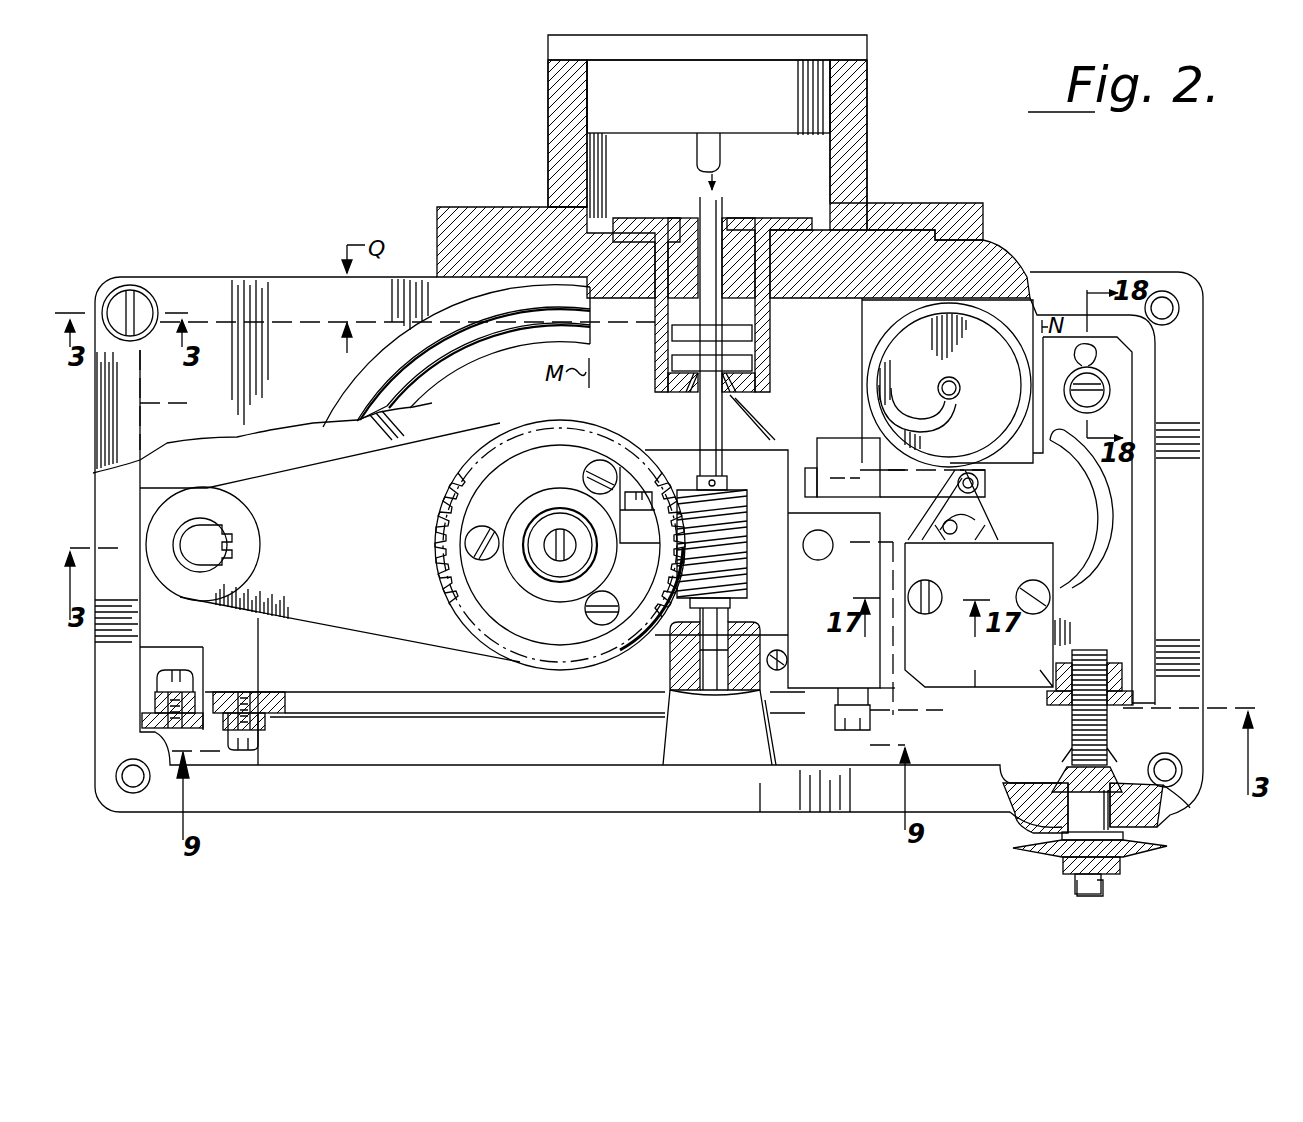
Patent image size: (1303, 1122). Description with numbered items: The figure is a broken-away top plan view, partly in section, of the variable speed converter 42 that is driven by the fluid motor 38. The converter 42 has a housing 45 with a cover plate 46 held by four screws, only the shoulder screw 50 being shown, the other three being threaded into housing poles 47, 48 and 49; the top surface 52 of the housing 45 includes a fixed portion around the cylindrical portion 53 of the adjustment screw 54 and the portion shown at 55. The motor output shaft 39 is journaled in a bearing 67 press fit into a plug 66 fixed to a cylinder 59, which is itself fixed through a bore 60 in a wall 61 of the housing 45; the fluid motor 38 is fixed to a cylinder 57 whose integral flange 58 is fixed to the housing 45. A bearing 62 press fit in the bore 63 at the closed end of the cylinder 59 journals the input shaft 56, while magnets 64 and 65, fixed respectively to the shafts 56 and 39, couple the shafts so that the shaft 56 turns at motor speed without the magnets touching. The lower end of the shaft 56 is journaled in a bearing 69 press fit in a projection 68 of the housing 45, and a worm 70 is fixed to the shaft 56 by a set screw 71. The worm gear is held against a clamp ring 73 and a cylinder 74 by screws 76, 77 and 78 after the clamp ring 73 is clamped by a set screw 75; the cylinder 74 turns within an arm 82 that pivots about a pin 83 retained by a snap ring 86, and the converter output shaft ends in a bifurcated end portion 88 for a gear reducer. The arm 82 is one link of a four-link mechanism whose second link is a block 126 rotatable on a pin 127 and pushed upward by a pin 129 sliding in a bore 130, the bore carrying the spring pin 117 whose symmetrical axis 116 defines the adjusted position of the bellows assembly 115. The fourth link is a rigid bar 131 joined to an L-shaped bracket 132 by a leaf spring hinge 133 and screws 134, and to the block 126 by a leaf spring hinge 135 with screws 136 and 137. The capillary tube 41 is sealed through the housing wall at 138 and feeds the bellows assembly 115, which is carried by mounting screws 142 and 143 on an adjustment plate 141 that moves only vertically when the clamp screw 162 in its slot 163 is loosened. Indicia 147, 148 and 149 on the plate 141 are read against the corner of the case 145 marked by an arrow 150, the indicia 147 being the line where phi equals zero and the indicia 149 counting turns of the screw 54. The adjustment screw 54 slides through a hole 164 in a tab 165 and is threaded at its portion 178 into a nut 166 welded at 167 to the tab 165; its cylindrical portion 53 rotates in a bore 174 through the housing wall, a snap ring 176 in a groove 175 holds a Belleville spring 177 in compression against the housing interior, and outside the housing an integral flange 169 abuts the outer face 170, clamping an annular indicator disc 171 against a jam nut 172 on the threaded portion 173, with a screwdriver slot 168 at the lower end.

The fluid motor 38 is at (723, 132).
The output shaft 39 is at (722, 150).
The capillary tube 41 is at (1020, 432).
The variable speed converter 42 is at (1075, 190).
The housing 45 is at (1017, 274).
The cover plate 46 is at (292, 302).
The housing pole 47 is at (128, 790).
The housing pole 48 is at (1178, 764).
The housing pole 49 is at (1160, 300).
The shoulder screw 50 is at (112, 302).
The top surface 52 is at (268, 805).
The cylindrical portion 53 is at (1125, 850).
The adjustment screw 54 is at (1112, 891).
The fixed portion of housing 55 is at (262, 411).
The shaft 56 is at (700, 436).
The cylinder 57 is at (872, 130).
The flange 58 is at (908, 212).
The cylinder 59 is at (782, 318).
The bore 60 is at (668, 306).
The wall 61 is at (965, 260).
The bearing 62 is at (725, 390).
The bore 63 is at (692, 390).
The magnet 64 is at (760, 363).
The magnet 65 is at (748, 330).
The plug 66 is at (672, 222).
The bearing 67 is at (722, 224).
The projection 68 is at (665, 726).
The bearing 69 is at (740, 634).
The worm 70 is at (748, 532).
The set screw 71 is at (710, 482).
The clamp ring 73 is at (496, 490).
The cylinder 74 is at (534, 500).
The set screw 75 is at (642, 518).
The screw 76 is at (584, 482).
The screw 77 is at (486, 560).
The screw 78 is at (585, 610).
The arm 82 is at (265, 472).
The pin 83 is at (232, 562).
The snap ring 86 is at (222, 530).
The bifurcated end portion 88 is at (540, 528).
The bellows assembly 115 is at (968, 712).
The symmetrical axis 116 is at (985, 481).
The spring pin 117 is at (978, 489).
The block 126 is at (830, 438).
The pin 127 is at (812, 552).
The pin 129 is at (806, 482).
The bore 130 is at (845, 480).
The rigid bar 131 is at (376, 702).
The L-shaped bracket 132 is at (158, 662).
The leaf spring hinge 133 is at (232, 692).
The screw 134 is at (184, 678).
The leaf spring hinge 135 is at (840, 716).
The screw 136 is at (848, 730).
The screw 137 is at (788, 660).
The seal 138 is at (958, 384).
The adjustment plate 141 is at (1140, 570).
The mounting screw 142 is at (930, 614).
The mounting screw 143 is at (1050, 596).
The case 145 is at (976, 690).
The indicia 147 is at (930, 536).
The indicia 148 is at (988, 532).
The indicia 149 is at (1075, 630).
The arrow 150 is at (928, 612).
The clamp screw 162 is at (1100, 398).
The slot 163 is at (1100, 356).
The hole 164 is at (1060, 702).
The tab 165 is at (1135, 702).
The nut 166 is at (1118, 690).
The weld 167 is at (1125, 692).
The screwdriver slot 168 is at (1085, 892).
The flange 169 is at (1062, 836).
The outer face 170 is at (1130, 856).
The annular indicator disc 171 is at (1013, 850).
The jam nut 172 is at (1065, 870).
The threaded portion 173 is at (1082, 886).
The bore 174 is at (1170, 812).
The groove 175 is at (1098, 757).
The snap ring 176 is at (1060, 776).
The Belleville spring 177 is at (1020, 792).
The threaded portion 178 is at (1065, 670).